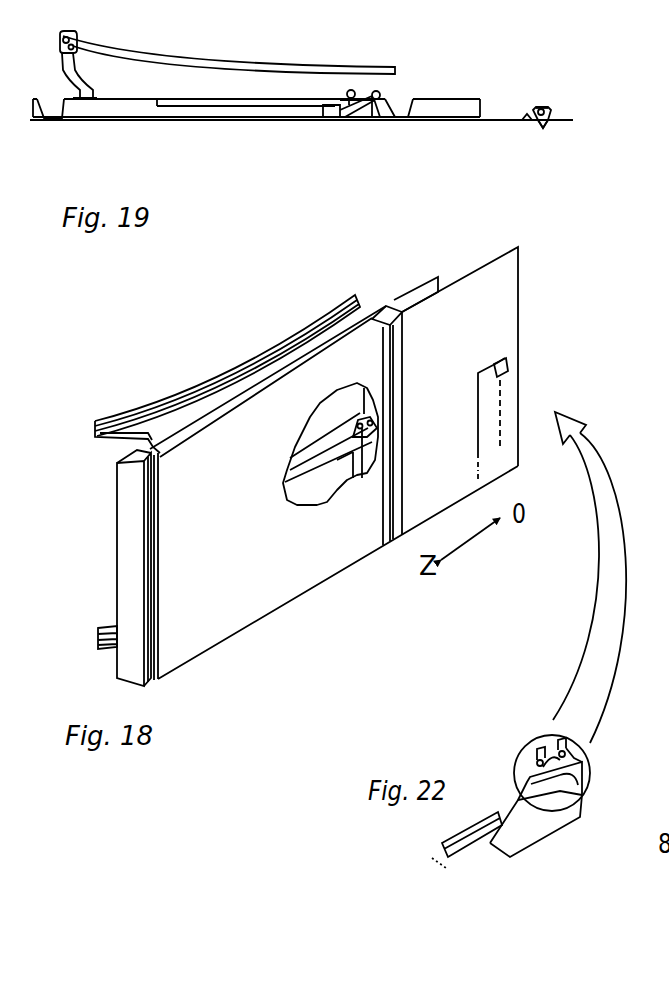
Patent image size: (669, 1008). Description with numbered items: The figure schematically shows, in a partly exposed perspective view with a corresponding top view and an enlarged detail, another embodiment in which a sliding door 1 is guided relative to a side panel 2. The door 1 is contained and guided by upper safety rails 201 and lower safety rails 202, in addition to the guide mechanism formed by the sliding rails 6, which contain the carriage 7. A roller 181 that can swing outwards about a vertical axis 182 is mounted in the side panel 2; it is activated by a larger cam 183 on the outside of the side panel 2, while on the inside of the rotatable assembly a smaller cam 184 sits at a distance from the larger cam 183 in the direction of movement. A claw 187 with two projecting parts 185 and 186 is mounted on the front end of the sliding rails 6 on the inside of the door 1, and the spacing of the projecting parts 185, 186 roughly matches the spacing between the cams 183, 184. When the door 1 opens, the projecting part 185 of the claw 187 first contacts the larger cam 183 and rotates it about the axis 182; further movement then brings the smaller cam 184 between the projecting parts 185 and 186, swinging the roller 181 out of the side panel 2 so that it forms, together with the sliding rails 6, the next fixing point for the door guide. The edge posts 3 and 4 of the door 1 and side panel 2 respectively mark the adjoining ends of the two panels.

In FIG. 19, the door 1 is at (230, 121).
In FIG. 18, the door 1 is at (226, 575).
In FIG. 19, the side panel 2 is at (452, 124).
In FIG. 18, the side panel 2 is at (453, 355).
In FIG. 19, the edge post of first panel 3 is at (54, 124).
In FIG. 18, the edge post of first panel 3 is at (123, 518).
In FIG. 19, the edge post of second panel 4 is at (417, 108).
In FIG. 18, the edge post of second panel 4 is at (390, 307).
In FIG. 19, the sliding rails 6 is at (138, 111).
In FIG. 18, the sliding rails 6 is at (305, 470).
In FIG. 22, the sliding rails 6 is at (473, 848).
In FIG. 19, the carriage 7 is at (340, 124).
In FIG. 19, the roller 181 is at (556, 110).
In FIG. 19, the vertical axis 182 is at (541, 105).
In FIG. 19, the larger cam 183 is at (548, 130).
In FIG. 18, the larger cam 183 is at (507, 370).
In FIG. 22, the larger cam 183 is at (573, 767).
In FIG. 19, the smaller cam 184 is at (527, 119).
In FIG. 22, the smaller cam 184 is at (529, 780).
In FIG. 22, the projecting part 185 is at (573, 789).
In FIG. 22, the projecting part 186 is at (517, 800).
In FIG. 18, the claw 187 is at (352, 480).
In FIG. 22, the claw 187 is at (567, 833).
In FIG. 19, the upper safety rails 201 is at (156, 58).
In FIG. 18, the upper safety rails 201 is at (146, 408).
In FIG. 18, the lower safety rails 202 is at (112, 626).